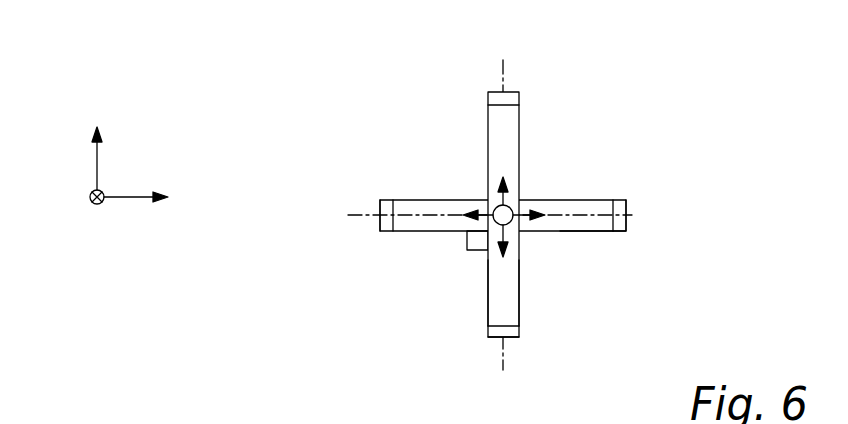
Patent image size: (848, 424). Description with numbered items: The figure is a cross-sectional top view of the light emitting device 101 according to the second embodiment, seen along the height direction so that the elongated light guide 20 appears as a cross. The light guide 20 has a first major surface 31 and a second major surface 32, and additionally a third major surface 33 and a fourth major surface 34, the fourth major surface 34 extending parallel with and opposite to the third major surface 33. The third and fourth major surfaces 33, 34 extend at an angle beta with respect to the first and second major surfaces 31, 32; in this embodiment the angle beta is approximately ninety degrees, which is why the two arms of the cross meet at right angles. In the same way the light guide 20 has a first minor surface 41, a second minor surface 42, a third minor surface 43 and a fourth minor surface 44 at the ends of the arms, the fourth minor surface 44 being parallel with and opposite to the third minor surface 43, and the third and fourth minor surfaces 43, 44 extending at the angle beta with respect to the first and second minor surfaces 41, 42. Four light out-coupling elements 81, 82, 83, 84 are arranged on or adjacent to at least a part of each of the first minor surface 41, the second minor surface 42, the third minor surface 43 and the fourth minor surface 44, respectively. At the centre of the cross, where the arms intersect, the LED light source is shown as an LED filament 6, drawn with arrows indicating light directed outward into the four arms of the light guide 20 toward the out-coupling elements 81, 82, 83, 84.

The LED filament 6 is at (512, 232).
The elongated light guide 20 is at (413, 298).
The first major surface 31 is at (580, 200).
The second major surface 32 is at (580, 231).
The third major surface 33 is at (519, 283).
The fourth major surface 34 is at (488, 298).
The first minor surface 41 is at (608, 231).
The second minor surface 42 is at (393, 218).
The third minor surface 43 is at (506, 327).
The fourth minor surface 44 is at (512, 123).
The light out-coupling element 81 is at (620, 224).
The light out-coupling element 82 is at (380, 224).
The light out-coupling element 83 is at (497, 337).
The light out-coupling element 84 is at (497, 97).
The light emitting device 101 is at (600, 95).